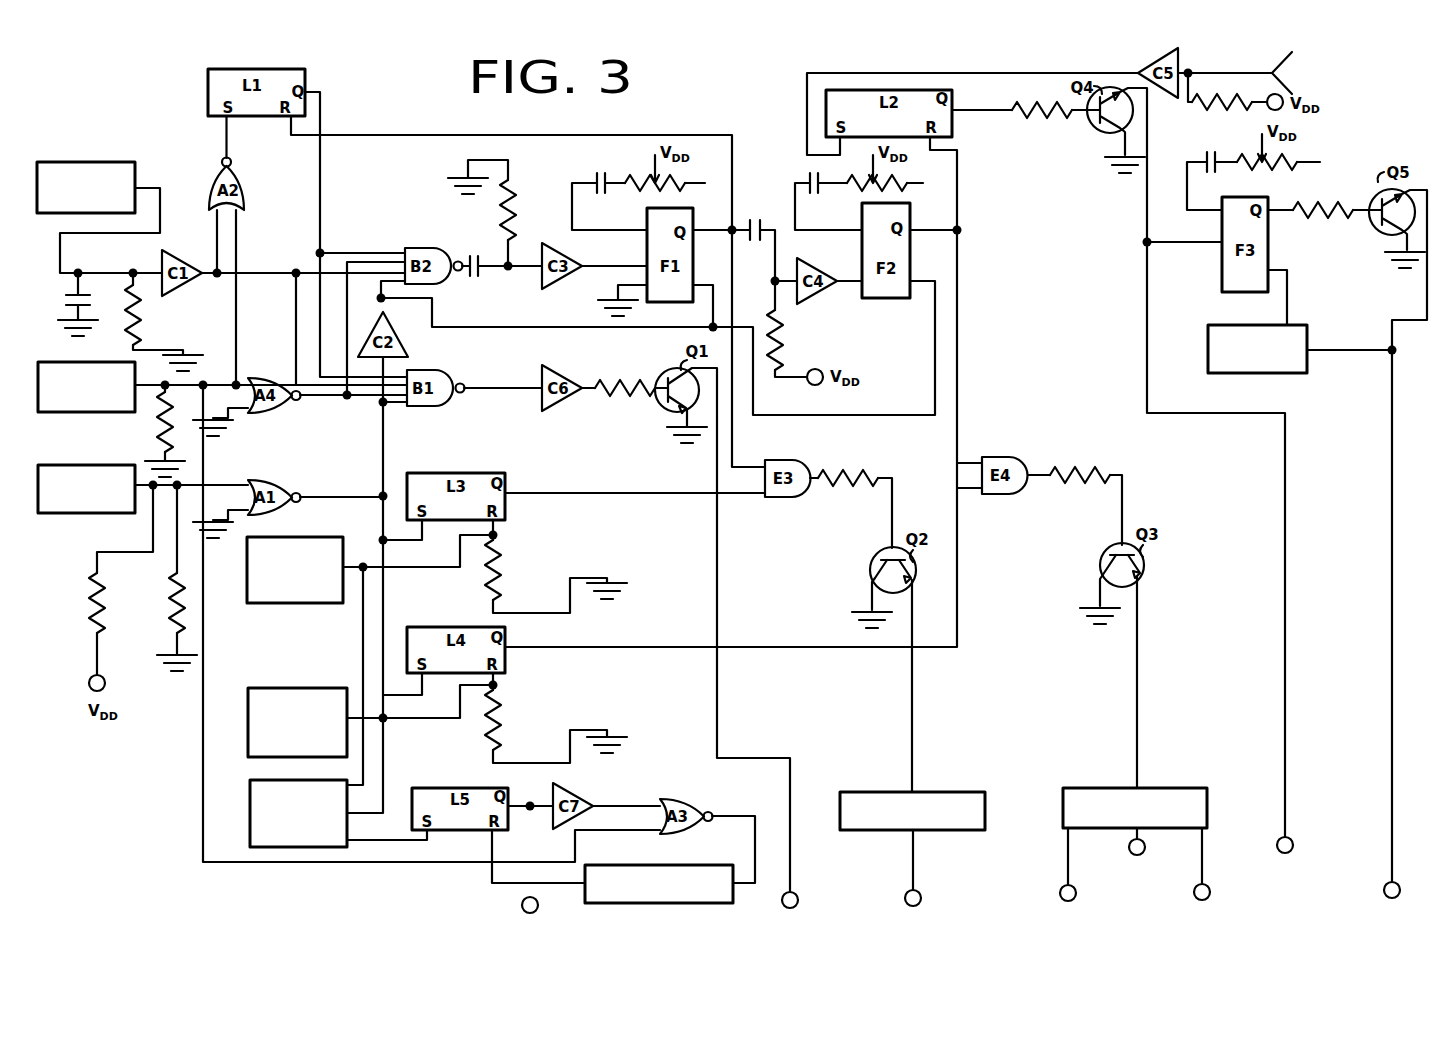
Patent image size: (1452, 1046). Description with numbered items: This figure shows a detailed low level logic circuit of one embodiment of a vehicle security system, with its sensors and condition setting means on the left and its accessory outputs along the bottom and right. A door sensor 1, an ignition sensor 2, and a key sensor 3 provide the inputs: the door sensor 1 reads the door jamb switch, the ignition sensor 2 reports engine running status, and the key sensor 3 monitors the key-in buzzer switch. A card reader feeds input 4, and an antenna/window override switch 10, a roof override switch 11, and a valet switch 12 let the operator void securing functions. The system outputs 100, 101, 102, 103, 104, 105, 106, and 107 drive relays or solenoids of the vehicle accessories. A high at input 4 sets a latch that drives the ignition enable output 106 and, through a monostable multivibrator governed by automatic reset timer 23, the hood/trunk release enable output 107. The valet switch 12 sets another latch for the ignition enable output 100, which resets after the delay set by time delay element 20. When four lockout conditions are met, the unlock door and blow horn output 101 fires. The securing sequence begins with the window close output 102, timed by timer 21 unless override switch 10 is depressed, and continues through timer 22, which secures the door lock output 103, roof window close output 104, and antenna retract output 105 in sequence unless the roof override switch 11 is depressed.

The door sensor 1 is at (118, 170).
The ignition sensor 2 is at (128, 396).
The key sensor 3 is at (50, 503).
The card reader input 4 is at (1277, 62).
The antenna/window override switch 10 is at (340, 546).
The roof override switch 11 is at (275, 692).
The valet switch 12 is at (258, 785).
The time delay element 20 is at (718, 872).
The timer 21 is at (958, 793).
The timer 22 is at (1177, 792).
The automatic reset timer 23 is at (1298, 333).
The ignition enable output 100 is at (522, 905).
The unlock door / blow horn output 101 is at (800, 898).
The window close output 102 is at (922, 897).
The door lock output 103 is at (1060, 893).
The roof window close output 104 is at (1145, 847).
The antenna retract output 105 is at (1210, 884).
The ignition enable output 106 is at (1293, 842).
The hood/trunk release enable output 107 is at (1400, 883).